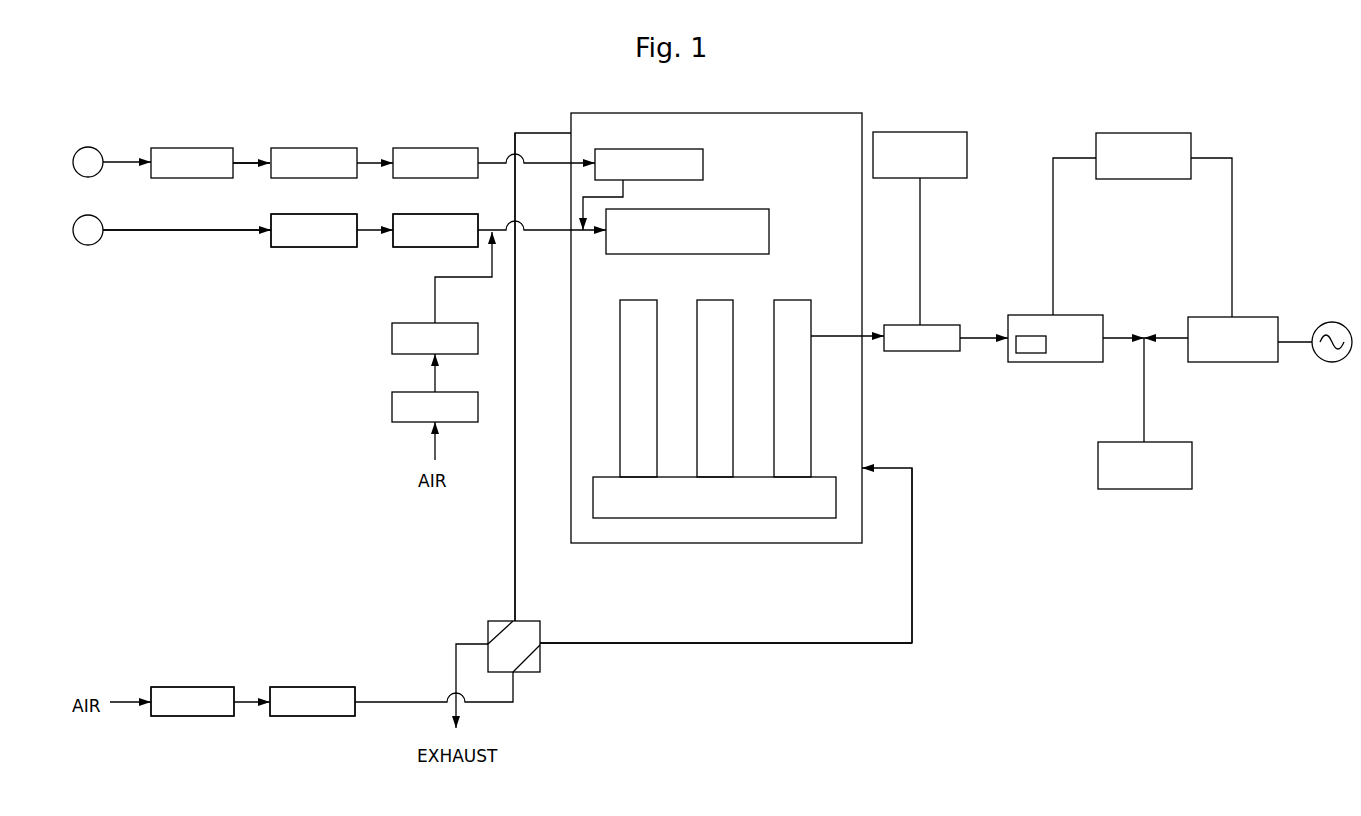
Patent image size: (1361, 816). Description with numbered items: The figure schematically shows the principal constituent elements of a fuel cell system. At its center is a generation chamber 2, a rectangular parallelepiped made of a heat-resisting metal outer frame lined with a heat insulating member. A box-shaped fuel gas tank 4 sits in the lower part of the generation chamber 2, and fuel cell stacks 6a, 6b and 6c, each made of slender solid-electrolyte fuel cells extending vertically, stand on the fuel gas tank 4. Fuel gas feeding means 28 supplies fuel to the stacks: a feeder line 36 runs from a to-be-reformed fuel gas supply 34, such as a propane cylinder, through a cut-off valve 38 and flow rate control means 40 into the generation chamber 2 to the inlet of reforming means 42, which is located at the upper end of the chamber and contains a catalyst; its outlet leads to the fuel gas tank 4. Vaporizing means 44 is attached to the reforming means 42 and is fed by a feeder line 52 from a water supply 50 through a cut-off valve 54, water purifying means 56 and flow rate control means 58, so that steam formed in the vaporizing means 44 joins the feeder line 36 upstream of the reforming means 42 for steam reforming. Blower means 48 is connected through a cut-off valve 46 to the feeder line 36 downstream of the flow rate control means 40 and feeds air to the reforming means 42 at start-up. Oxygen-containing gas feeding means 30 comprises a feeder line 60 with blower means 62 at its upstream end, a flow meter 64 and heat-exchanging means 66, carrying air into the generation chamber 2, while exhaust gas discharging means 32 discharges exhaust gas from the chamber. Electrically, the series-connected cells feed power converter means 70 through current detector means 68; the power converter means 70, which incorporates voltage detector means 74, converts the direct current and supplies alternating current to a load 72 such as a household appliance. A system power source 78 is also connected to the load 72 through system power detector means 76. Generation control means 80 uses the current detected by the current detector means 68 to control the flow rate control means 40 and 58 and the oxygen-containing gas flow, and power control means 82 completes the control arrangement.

The generation chamber 2 is at (782, 113).
The fuel gas tank 4 is at (733, 510).
The fuel cell stack 6a is at (618, 341).
The fuel cell stack 6b is at (695, 341).
The fuel cell stack 6c is at (772, 341).
The fuel gas feeding means 28 is at (312, 250).
The oxygen-containing gas feeding means 30 is at (257, 653).
The exhaust gas discharging means 32 is at (514, 308).
The to-be-reformed fuel gas supply 34 is at (88, 245).
The feeder line 36 is at (190, 233).
The cut-off valve 38 is at (293, 214).
The flow rate control means 40 is at (428, 214).
The reforming means 42 is at (706, 209).
The vaporizing means 44 is at (645, 149).
The cut-off valve 46 is at (392, 336).
The blower means 48 is at (392, 404).
The water supply 50 is at (88, 147).
The feeder line 52 is at (250, 160).
The cut-off valve 54 is at (168, 148).
The water purifying means 56 is at (293, 148).
The flow rate control means 58 is at (428, 148).
The feeder line 60 is at (643, 645).
The blower means 62 is at (175, 687).
The flow meter 64 is at (293, 687).
The heat-exchanging means 66 is at (540, 633).
The current detector means 68 is at (943, 352).
The power converter means 70 is at (1073, 362).
The load 72 is at (1192, 462).
The voltage detector means 74 is at (1027, 354).
The system power detector means 76 is at (1246, 362).
The system power source 78 is at (1333, 362).
The generation control means 80 is at (933, 132).
The power control means 82 is at (1158, 133).